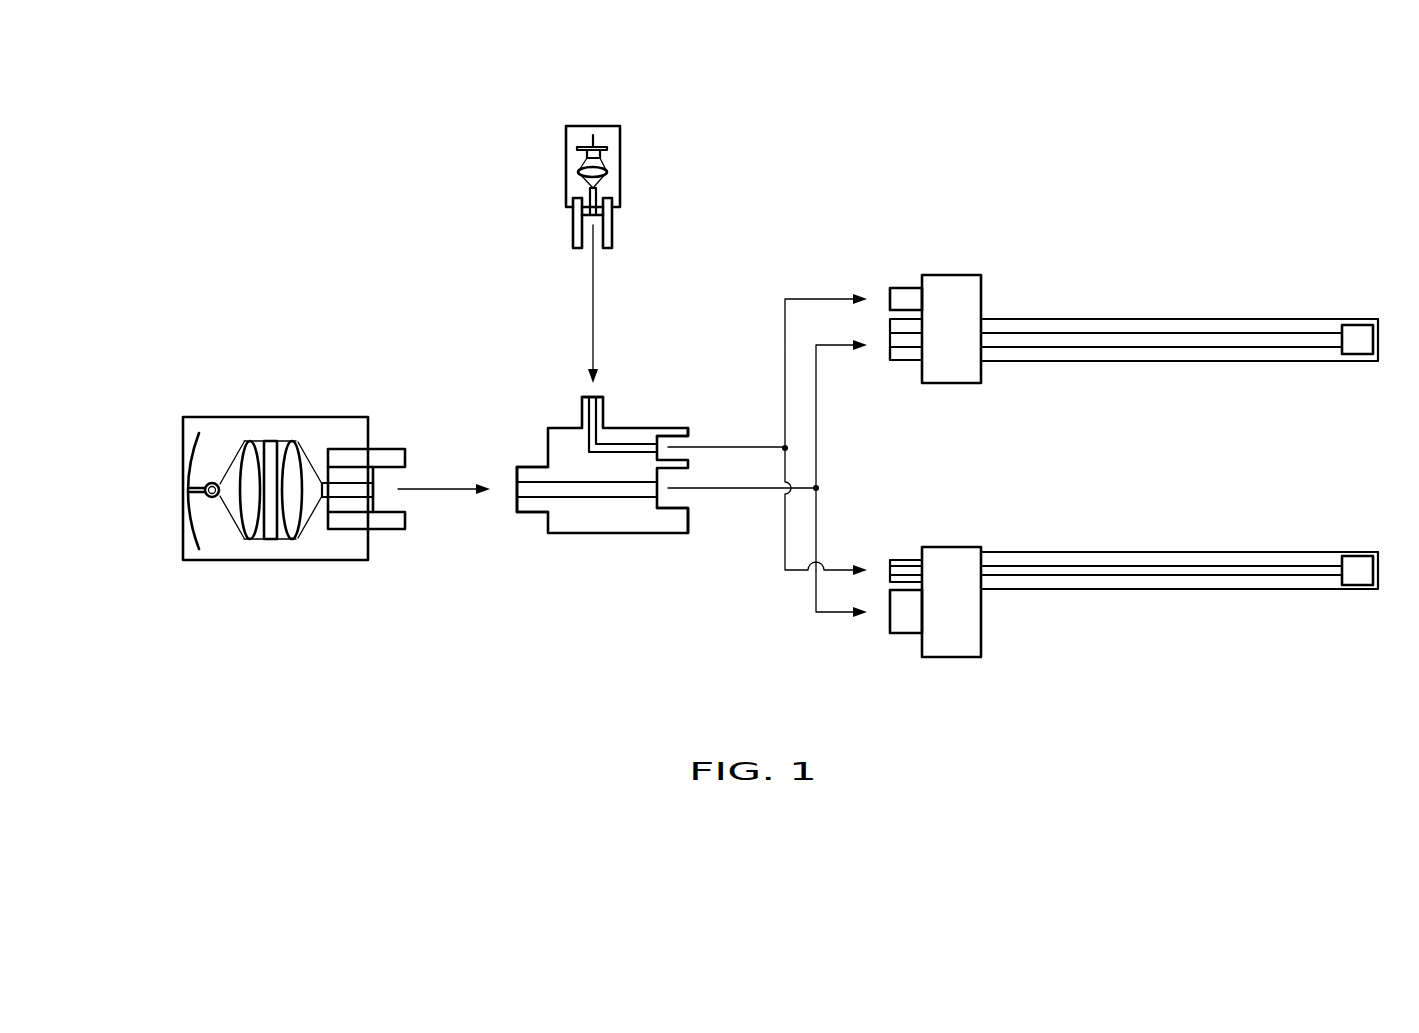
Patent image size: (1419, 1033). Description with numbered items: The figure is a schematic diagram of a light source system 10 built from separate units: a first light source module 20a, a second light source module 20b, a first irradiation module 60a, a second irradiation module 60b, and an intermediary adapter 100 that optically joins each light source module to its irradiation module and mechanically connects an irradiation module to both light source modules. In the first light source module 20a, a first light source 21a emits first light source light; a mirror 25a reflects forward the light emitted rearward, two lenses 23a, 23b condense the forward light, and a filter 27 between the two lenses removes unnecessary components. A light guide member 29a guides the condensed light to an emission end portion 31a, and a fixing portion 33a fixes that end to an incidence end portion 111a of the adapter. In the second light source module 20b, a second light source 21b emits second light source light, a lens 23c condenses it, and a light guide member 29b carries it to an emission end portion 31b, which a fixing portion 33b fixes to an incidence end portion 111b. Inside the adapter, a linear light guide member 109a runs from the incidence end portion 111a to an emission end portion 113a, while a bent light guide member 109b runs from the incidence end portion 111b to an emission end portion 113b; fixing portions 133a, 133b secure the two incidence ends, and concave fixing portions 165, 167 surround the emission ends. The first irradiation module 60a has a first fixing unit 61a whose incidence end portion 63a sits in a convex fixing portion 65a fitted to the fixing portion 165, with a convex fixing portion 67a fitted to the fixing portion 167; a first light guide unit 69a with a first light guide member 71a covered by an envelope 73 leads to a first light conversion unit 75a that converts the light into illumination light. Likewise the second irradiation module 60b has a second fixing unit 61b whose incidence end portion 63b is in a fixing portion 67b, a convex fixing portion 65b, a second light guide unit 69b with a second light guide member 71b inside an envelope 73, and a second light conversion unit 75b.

The light source system 10 is at (903, 105).
The first light source module 20a is at (360, 385).
The second light source module 20b is at (662, 147).
The first light source 21a is at (213, 500).
The second light source 21b is at (587, 153).
The lens 23a is at (247, 440).
The lens 23b is at (293, 440).
The lens 23c is at (582, 173).
The mirror 25a is at (190, 450).
The filter 27 is at (272, 441).
The light guide member 29a is at (340, 498).
The light guide member 29b is at (590, 205).
The emission end portion 31a is at (368, 493).
The emission end portion 31b is at (597, 213).
The fixing portion 33a is at (390, 525).
The fixing portion 33b is at (615, 240).
The first irradiation module 60a is at (1128, 235).
The second irradiation module 60b is at (1128, 502).
The first fixing unit 61a is at (960, 278).
The second fixing unit 61b is at (960, 552).
The incidence end portion 63a is at (885, 345).
The incidence end portion 63b is at (888, 570).
The convex fixing portion 65a is at (907, 355).
The convex fixing portion 65b is at (907, 630).
The convex fixing portion 67a is at (910, 289).
The fixing portion 67b is at (910, 559).
The first light guide unit 69a is at (1181, 319).
The second light guide unit 69b is at (1181, 553).
The first light guide member 71a is at (1234, 336).
The second light guide member 71b is at (1234, 567).
The envelope 73 is at (1298, 560).
The first light conversion unit 75a is at (1358, 328).
The second light conversion unit 75b is at (1358, 560).
The intermediary adapter 100 is at (600, 625).
The light guide member 109a is at (602, 490).
The light guide member 109b is at (625, 443).
The incidence end portion 111a is at (516, 492).
The incidence end portion 111b is at (593, 394).
The emission end portion 113a is at (657, 492).
The emission end portion 113b is at (657, 441).
The fixing portion 133a is at (533, 510).
The fixing portion 133b is at (580, 420).
The concave fixing portion 165 is at (673, 528).
The concave fixing portion 167 is at (673, 428).